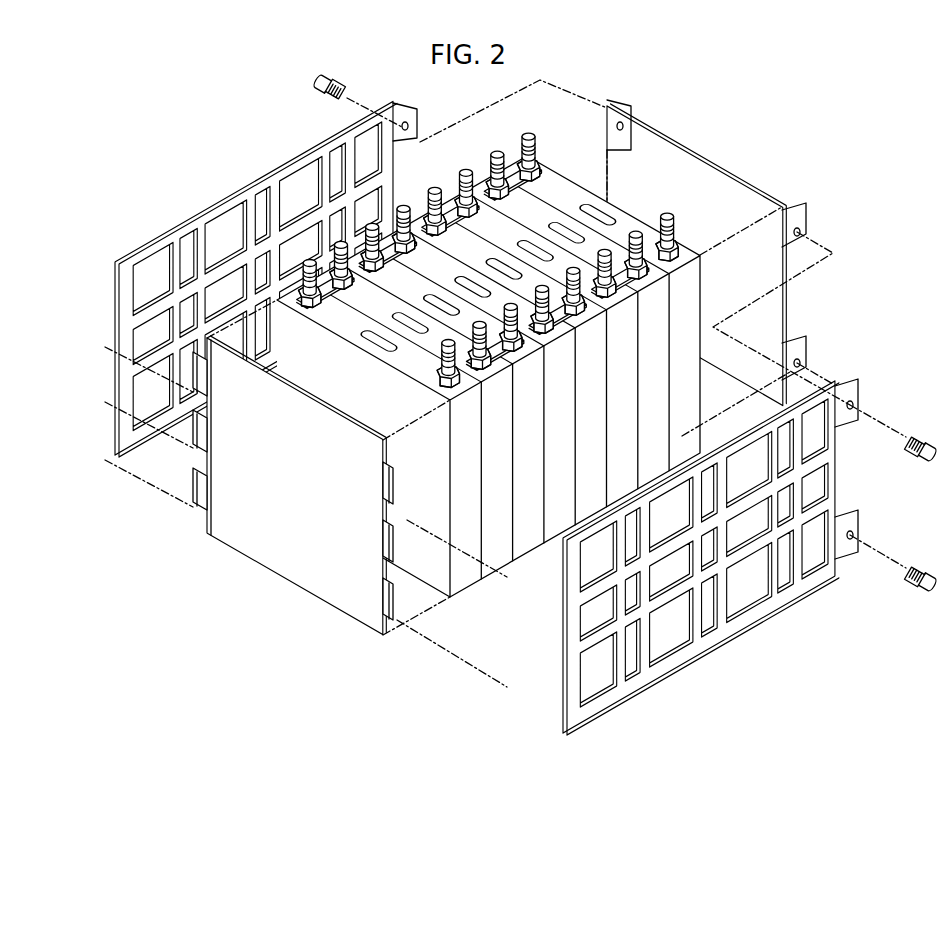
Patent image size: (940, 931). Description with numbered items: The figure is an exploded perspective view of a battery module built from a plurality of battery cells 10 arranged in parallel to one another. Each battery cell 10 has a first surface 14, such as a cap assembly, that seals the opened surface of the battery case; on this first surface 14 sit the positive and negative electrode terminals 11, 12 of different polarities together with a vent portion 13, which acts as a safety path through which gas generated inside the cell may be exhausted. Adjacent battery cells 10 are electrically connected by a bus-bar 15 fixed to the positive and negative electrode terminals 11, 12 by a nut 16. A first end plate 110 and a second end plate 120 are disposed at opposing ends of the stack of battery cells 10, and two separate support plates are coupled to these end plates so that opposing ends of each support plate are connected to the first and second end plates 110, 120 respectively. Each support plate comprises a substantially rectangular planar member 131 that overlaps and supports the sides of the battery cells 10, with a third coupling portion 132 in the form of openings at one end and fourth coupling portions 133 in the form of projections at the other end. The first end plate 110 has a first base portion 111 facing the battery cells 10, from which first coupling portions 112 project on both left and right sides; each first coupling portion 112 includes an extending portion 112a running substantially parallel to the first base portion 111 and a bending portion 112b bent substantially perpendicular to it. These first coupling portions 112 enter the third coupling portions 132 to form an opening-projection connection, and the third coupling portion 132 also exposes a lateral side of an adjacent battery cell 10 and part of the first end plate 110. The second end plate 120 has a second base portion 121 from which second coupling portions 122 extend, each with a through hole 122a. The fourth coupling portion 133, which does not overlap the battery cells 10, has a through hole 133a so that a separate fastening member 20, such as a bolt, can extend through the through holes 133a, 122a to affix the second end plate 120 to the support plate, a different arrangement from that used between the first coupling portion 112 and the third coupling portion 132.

The battery cell 10 is at (481, 371).
The positive electrode terminal 11 is at (526, 140).
The negative electrode terminal 12 is at (667, 217).
The vent portion 13 is at (597, 208).
The first surface 14 is at (633, 227).
The bus-bar 15 is at (308, 285).
The nut 16 is at (360, 255).
The fastening member 20 is at (927, 567).
The first end plate 110 is at (251, 515).
The first base portion 111 is at (292, 563).
The first coupling portion 112 is at (251, 523).
The extending portion 112a is at (200, 490).
The bending portion 112b is at (200, 474).
The second end plate 120 is at (747, 244).
The second base portion 121 is at (662, 180).
The second coupling portion 122 is at (747, 231).
The through hole 122a is at (632, 125).
The planar member 131 is at (712, 643).
The third coupling portion 132 is at (592, 677).
The fourth coupling portion 133 is at (886, 461).
The through hole 133a is at (855, 405).